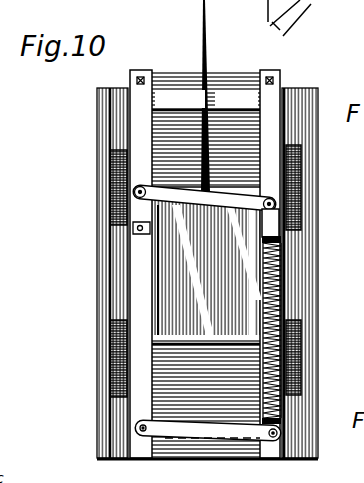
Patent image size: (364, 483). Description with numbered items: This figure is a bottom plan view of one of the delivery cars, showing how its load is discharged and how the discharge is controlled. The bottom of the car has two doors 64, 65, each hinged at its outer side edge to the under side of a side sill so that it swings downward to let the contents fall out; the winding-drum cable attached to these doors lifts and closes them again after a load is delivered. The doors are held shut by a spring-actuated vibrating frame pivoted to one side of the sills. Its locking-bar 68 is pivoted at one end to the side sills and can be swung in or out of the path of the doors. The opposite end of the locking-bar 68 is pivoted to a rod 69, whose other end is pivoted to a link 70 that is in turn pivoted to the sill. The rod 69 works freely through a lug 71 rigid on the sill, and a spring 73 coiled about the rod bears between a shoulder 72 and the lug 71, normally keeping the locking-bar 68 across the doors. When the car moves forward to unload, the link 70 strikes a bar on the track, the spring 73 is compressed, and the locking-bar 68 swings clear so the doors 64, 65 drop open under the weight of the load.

The door 64 is at (183, 267).
The door 65 is at (237, 267).
The locking-bar 68 is at (205, 198).
The rod or bar 69 is at (279, 226).
The link 70 is at (208, 432).
The lug 71 is at (281, 239).
The shoulder 72 is at (284, 421).
The spring 73 is at (282, 305).